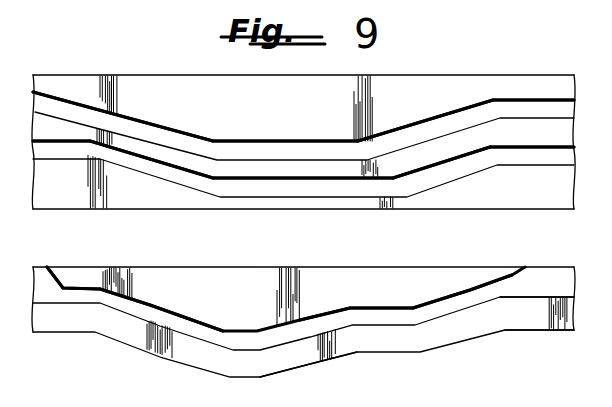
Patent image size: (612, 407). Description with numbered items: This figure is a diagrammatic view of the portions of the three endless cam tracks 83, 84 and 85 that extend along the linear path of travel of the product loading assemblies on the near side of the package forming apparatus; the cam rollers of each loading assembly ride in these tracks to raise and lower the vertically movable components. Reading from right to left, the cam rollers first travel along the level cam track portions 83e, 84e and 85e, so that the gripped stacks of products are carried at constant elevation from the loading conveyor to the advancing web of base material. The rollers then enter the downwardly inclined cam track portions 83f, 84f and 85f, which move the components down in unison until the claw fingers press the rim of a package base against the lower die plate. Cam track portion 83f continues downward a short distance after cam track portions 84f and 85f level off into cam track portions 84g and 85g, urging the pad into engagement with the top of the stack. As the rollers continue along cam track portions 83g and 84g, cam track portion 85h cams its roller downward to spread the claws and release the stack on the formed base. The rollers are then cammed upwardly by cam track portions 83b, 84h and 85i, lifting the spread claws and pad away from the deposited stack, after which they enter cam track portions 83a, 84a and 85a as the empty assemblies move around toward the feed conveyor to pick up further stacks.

The cam track 83 is at (290, 152).
The cam track portion 83a is at (37, 93).
The left inclined portion of upper strip 83b is at (158, 125).
The cam track portion 83g is at (255, 139).
The cam track portion 83f is at (441, 135).
The cam track portion 83e is at (546, 108).
The cam track 84 is at (312, 190).
The cam track portion 84a is at (46, 144).
The cam track portion 84h is at (131, 161).
The cam track portion 84g is at (257, 192).
The cam track portion 84f is at (449, 171).
The cam track portion 84e is at (547, 158).
The cam track 85 is at (262, 334).
The cam track portion 85a is at (74, 293).
The cam track portion 85i is at (175, 318).
The cam track portion 85g is at (371, 313).
The cam track portion 85h is at (298, 329).
The cam track portion 85f is at (473, 292).
The cam track portion 85e is at (556, 283).